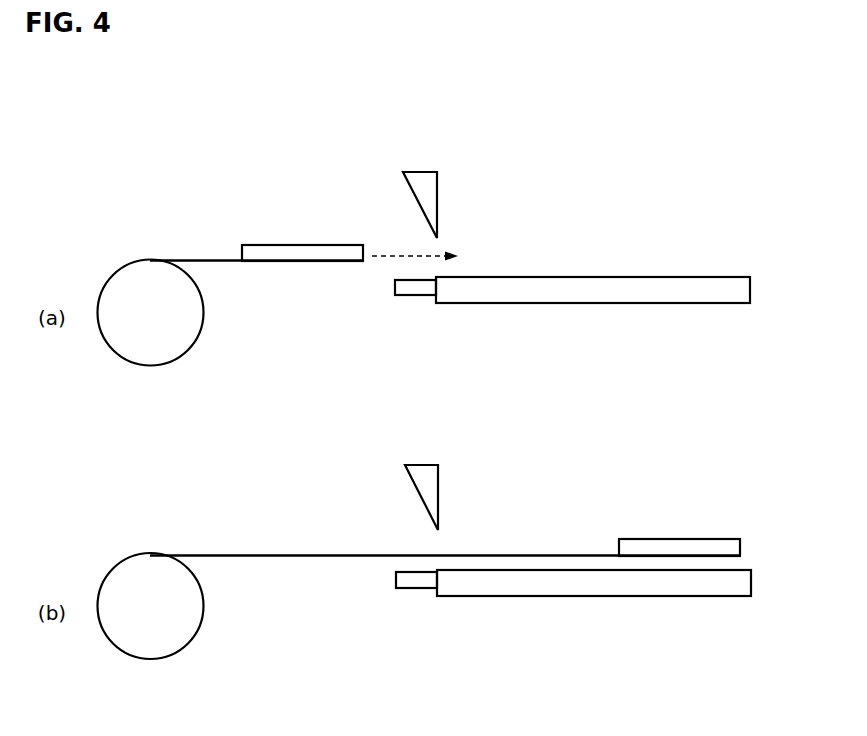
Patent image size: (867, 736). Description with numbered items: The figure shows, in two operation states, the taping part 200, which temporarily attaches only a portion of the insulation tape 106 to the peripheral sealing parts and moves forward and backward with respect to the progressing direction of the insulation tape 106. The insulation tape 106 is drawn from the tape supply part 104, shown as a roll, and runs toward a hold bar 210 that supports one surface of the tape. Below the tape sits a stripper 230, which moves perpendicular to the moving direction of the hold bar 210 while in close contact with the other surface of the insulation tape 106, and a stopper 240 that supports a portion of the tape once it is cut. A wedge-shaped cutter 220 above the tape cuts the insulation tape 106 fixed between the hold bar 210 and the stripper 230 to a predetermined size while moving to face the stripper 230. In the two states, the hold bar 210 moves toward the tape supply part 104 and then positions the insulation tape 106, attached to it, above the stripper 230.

The taping part 200 is at (89, 96).
The tape supply part 104 is at (148, 376).
The insulation tape 106 is at (199, 259).
The hold bar 210 is at (290, 253).
The cutter 220 is at (422, 176).
The stripper 230 is at (610, 288).
The stopper 240 is at (415, 296).